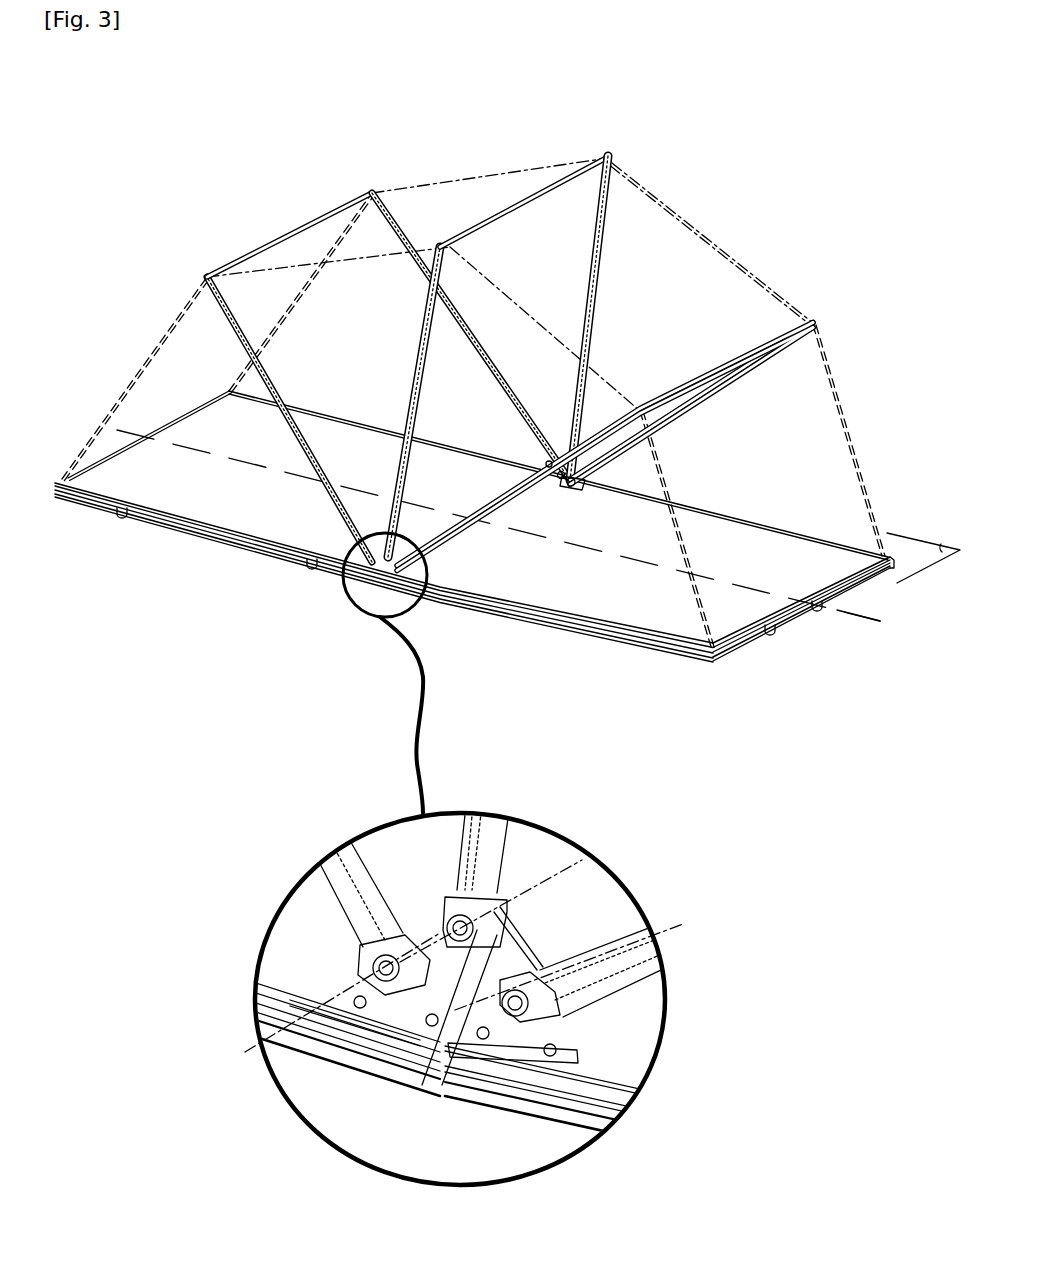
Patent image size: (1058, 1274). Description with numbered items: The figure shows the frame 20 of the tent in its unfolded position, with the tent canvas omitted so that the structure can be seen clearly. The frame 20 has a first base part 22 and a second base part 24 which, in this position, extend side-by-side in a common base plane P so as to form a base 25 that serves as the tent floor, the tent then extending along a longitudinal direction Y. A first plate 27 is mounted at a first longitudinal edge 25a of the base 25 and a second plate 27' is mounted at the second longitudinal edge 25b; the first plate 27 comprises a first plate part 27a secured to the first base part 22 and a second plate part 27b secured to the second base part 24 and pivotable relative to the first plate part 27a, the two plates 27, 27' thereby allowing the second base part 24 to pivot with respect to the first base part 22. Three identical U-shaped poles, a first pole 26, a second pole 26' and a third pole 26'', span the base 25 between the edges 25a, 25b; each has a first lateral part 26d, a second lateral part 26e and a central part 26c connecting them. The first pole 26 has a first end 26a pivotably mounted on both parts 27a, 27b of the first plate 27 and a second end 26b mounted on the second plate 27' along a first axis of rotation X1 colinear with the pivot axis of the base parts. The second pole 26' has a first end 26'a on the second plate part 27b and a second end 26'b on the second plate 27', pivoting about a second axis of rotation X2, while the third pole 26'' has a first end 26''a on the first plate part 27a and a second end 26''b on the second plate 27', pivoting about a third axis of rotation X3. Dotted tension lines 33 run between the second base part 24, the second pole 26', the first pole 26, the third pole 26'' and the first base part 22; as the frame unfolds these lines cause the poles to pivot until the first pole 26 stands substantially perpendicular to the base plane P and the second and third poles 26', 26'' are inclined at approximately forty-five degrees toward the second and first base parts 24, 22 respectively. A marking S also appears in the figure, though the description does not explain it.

The frame 20 is at (386, 152).
The first base part 22 is at (217, 503).
The second base part 24 is at (650, 608).
The base 25 is at (268, 605).
The first longitudinal edge 25a is at (240, 540).
The second longitudinal edge 25b is at (343, 420).
The first pole 26 is at (509, 342).
The second pole 26' is at (620, 405).
The third pole 26'' is at (366, 372).
The first end of the first pole 26a is at (462, 893).
The first end of the second pole 26'a is at (617, 973).
The first end of the third pole 26''a is at (296, 906).
The second end of the first pole 26b is at (555, 442).
The second end of the second pole 26'b is at (617, 484).
The second end of the third pole 26''b is at (500, 443).
The central part 26c is at (530, 190).
The first lateral part 26d is at (412, 362).
The second lateral part 26e is at (598, 277).
The first plate 27 is at (408, 1029).
The second plate 27' is at (575, 511).
The first plate part 27a is at (407, 1003).
The second plate part 27b is at (530, 1033).
The tension lines 33 is at (560, 168).
The plane S is at (77, 556).
The base plane P is at (923, 558).
The longitudinal direction Y is at (858, 634).
The first axis of rotation X1 is at (508, 911).
The second axis of rotation X2 is at (582, 960).
The third axis of rotation X3 is at (326, 995).